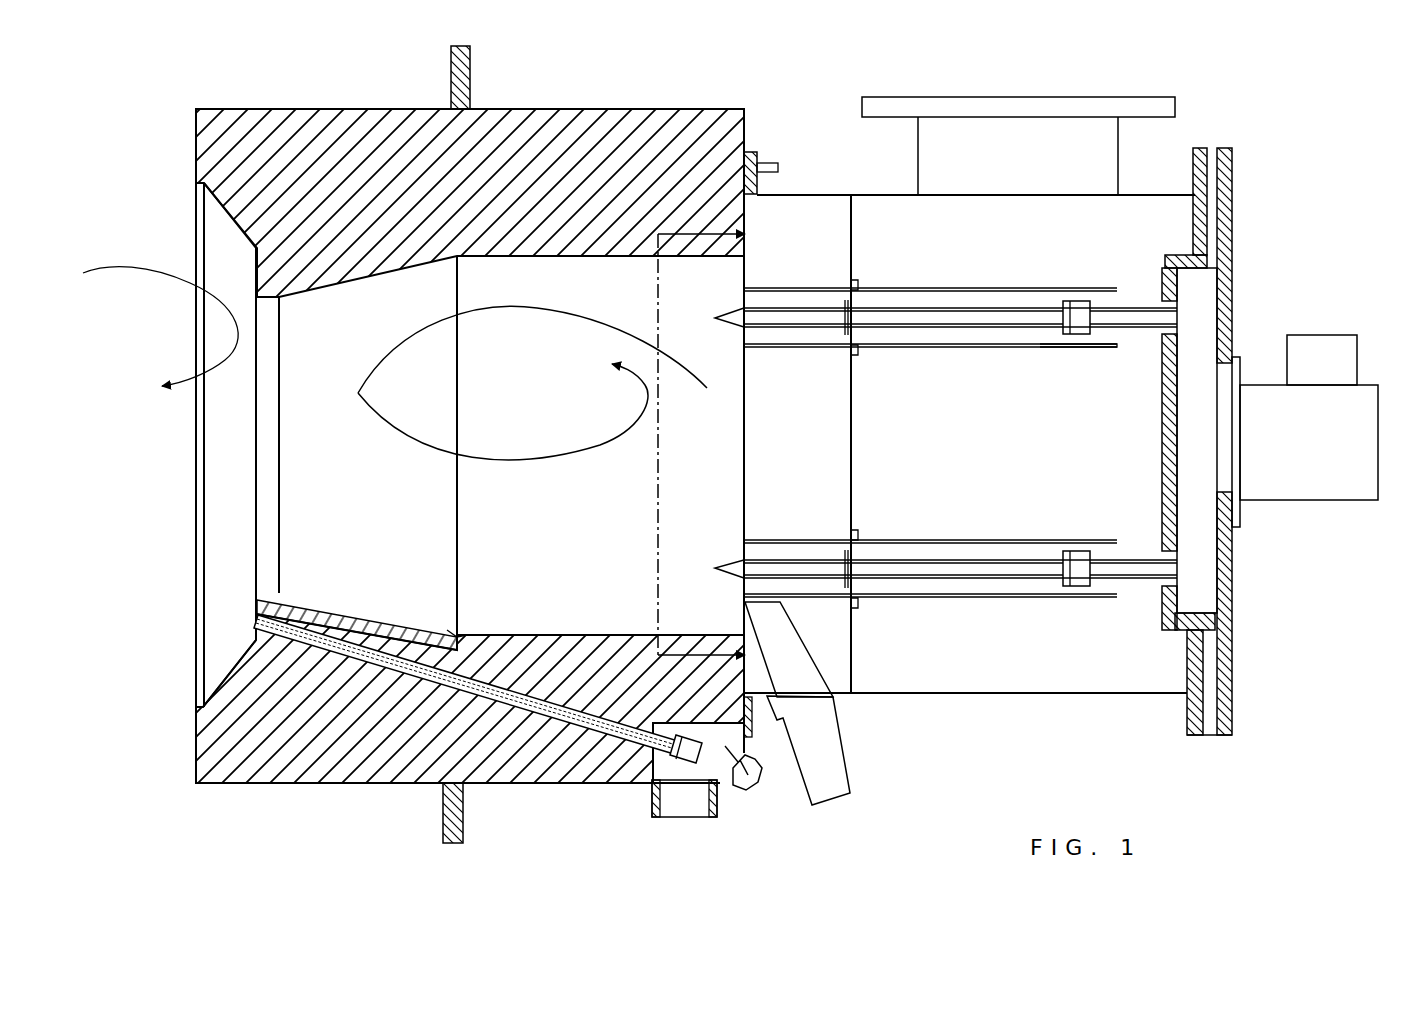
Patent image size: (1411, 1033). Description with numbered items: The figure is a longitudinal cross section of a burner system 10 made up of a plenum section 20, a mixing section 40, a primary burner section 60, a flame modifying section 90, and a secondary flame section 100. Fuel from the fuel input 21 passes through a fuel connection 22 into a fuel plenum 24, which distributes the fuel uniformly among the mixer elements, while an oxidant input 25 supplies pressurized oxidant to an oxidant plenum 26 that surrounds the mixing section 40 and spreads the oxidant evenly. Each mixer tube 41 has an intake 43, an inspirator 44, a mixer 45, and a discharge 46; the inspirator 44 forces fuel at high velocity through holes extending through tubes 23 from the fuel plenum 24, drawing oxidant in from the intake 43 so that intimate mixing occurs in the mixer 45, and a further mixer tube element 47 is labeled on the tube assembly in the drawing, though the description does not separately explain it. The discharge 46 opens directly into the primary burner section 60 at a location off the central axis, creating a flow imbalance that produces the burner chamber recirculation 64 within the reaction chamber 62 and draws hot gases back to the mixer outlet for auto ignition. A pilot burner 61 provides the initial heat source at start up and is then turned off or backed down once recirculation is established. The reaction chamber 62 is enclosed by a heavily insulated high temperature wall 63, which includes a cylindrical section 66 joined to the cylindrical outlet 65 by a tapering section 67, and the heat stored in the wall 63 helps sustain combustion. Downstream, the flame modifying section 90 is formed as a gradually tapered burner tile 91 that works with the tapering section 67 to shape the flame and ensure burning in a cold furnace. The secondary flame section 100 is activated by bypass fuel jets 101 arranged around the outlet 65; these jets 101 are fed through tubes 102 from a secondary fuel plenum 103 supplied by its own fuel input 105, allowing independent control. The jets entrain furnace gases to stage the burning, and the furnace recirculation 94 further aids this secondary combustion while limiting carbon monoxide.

The burner system 10 is at (705, 82).
The plenum section 20 is at (969, 444).
The fuel input 21 is at (1313, 353).
The fuel connection 22 is at (1322, 478).
The tubes 23 is at (1147, 310).
The fuel plenum 24 is at (1197, 458).
The oxidant input 25 is at (1048, 136).
The oxidant plenum 26 is at (1133, 225).
The mixing section 40 is at (975, 342).
The mixer tube 41 is at (950, 540).
The intake 43 is at (1135, 345).
The inspirator 44 is at (1073, 302).
The mixer 45 is at (1010, 308).
The discharge 46 is at (757, 298).
The insulating sleeve 47 is at (917, 312).
The primary burner section 60 is at (480, 446).
The pilot burner 61 is at (828, 752).
The reaction chamber 62 is at (687, 448).
The wall 63 is at (528, 628).
The burner chamber recirculation 64 is at (512, 463).
The outlet 65 is at (265, 470).
The cylindrical section 66 is at (640, 633).
The tapering section 67 is at (380, 618).
The flame modifying section 90 is at (222, 515).
The burner tile 91 is at (223, 673).
The furnace recirculation 94 is at (163, 280).
The secondary flame section 100 is at (147, 446).
The bypass fuel jets 101 is at (390, 678).
The tubes 102 is at (570, 730).
The secondary fuel plenum 103 is at (733, 768).
The fuel input 105 is at (682, 805).